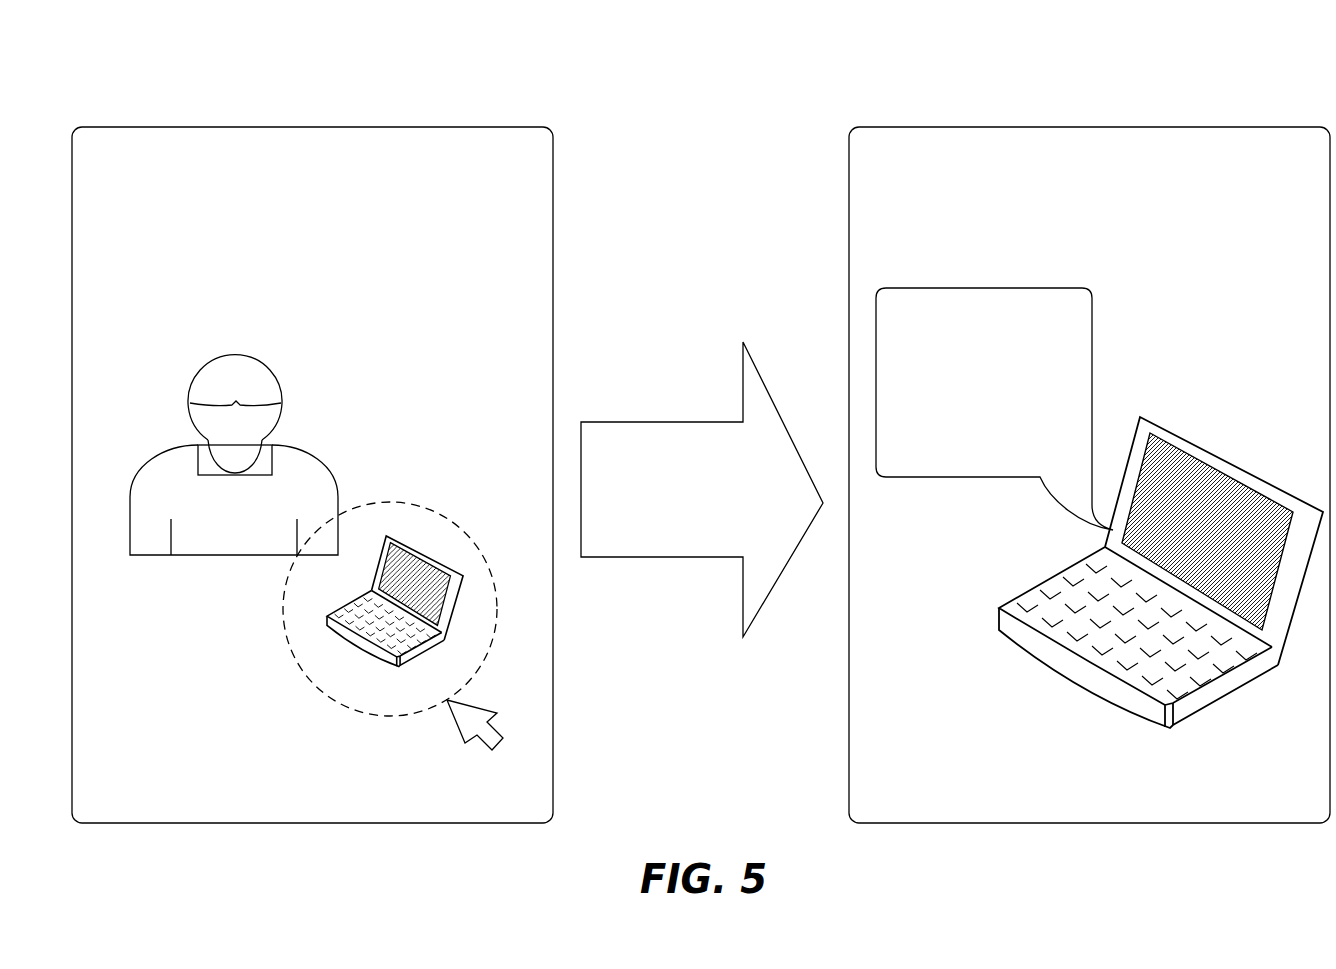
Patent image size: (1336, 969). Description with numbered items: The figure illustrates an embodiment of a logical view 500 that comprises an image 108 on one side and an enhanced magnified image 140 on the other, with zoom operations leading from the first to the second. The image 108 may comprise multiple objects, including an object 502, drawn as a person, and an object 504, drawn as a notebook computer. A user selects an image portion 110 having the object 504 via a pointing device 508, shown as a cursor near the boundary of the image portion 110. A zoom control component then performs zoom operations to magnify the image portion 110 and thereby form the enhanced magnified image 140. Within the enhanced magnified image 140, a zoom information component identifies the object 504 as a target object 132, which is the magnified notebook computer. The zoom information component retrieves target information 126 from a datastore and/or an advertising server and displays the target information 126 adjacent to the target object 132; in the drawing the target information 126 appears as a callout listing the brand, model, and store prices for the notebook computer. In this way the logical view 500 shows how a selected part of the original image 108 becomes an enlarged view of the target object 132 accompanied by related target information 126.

The logical view 500 is at (701, 424).
The image 108 is at (312, 475).
The image portion 110 is at (393, 503).
The object 502 is at (234, 471).
The object 504 is at (395, 611).
The pointing device 508 is at (492, 750).
The enhanced magnified image 140 is at (1089, 475).
The target information 126 is at (1093, 344).
The target object 132 is at (1161, 584).